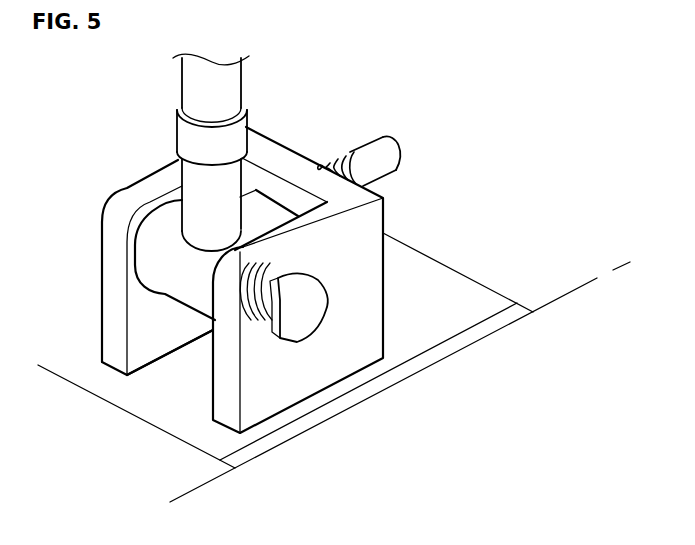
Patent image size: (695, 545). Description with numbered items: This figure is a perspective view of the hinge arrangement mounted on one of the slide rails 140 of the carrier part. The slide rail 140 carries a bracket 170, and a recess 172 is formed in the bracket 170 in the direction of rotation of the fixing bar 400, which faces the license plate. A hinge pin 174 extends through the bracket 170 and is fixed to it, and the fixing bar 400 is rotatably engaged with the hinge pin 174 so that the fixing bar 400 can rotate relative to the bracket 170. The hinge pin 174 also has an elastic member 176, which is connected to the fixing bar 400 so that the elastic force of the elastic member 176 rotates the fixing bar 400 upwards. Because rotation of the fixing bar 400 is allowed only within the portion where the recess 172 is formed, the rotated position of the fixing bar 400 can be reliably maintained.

The slide rail 140 is at (457, 355).
The bracket 170 is at (293, 383).
The recess 172 is at (183, 367).
The hinge pin 174 is at (307, 318).
The elastic member 176 is at (233, 332).
The fixing bar 400 is at (188, 135).